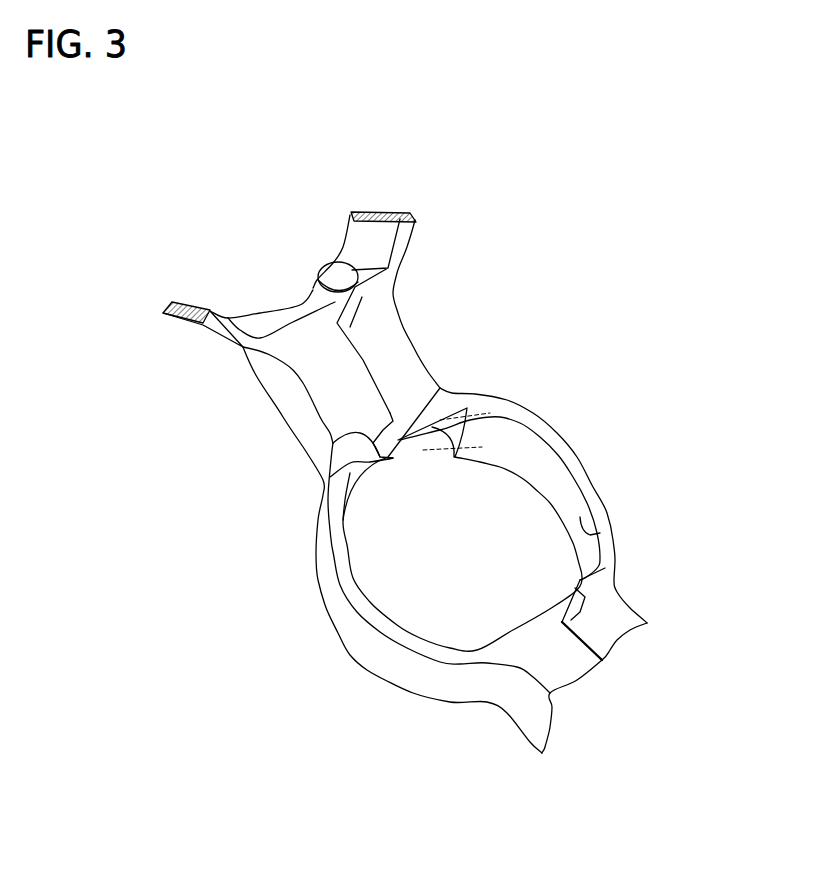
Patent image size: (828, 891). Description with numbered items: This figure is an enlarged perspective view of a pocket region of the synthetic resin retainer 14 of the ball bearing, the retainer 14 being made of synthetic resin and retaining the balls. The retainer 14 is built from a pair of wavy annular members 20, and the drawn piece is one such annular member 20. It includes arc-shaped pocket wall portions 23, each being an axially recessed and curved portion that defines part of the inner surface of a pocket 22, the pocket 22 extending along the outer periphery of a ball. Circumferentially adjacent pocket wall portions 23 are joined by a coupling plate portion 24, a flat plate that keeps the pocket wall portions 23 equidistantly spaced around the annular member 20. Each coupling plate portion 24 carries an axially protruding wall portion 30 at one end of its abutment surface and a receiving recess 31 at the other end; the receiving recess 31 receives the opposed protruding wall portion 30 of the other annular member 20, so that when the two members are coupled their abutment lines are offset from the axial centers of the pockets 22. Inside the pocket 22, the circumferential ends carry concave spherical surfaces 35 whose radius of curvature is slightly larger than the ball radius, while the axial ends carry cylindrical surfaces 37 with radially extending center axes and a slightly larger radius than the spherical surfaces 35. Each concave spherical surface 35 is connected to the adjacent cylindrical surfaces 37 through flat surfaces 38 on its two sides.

The synthetic resin retainer 14 is at (474, 536).
The annular member 20 is at (412, 325).
The pocket 22 is at (489, 502).
The pocket wall portion 23 is at (592, 484).
The coupling plate portion 24 is at (330, 393).
The protruding wall portion 30 is at (438, 388).
The receiving recess 31 is at (370, 443).
The concave spherical surface 35 is at (502, 440).
The cylindrical surface 37 is at (590, 535).
The flat surface 38 is at (467, 408).